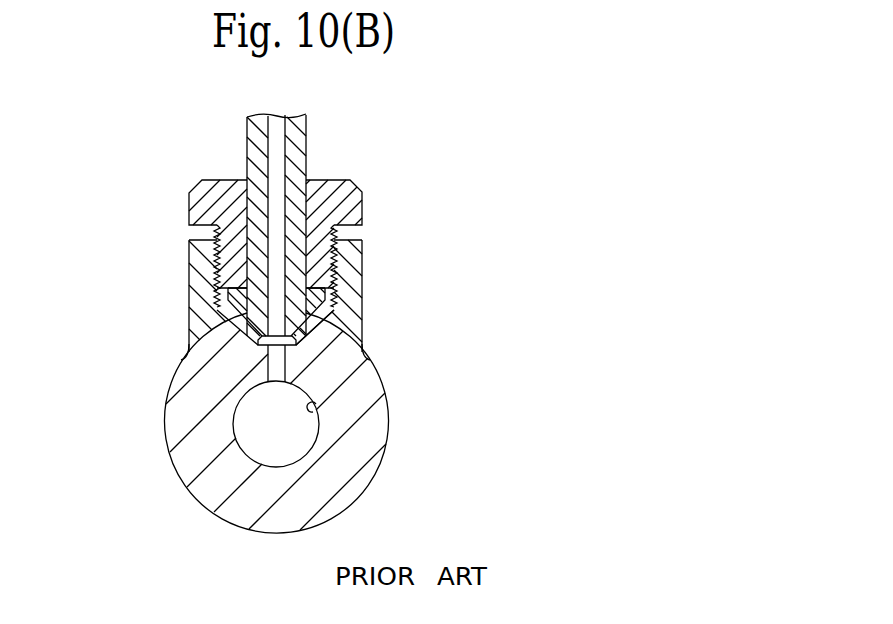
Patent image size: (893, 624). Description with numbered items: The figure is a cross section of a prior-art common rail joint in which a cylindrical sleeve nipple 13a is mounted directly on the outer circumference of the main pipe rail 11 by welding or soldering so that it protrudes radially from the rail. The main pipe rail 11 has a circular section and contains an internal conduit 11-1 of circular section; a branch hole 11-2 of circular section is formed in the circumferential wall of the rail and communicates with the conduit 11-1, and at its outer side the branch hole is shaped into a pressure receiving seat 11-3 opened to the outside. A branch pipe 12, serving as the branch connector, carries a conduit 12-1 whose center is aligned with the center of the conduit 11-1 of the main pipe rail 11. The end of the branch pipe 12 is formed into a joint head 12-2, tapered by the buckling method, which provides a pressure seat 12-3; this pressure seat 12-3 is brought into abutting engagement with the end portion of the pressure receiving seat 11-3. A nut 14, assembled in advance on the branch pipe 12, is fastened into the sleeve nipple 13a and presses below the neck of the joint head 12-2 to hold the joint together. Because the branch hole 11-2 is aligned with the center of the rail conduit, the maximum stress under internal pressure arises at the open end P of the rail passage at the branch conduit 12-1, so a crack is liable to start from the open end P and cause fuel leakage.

The main pipe rail 11 is at (382, 440).
The internal conduit 11-1 is at (316, 404).
The branch hole 11-2 is at (358, 343).
The pressure receiving seat 11-3 is at (262, 344).
The branch pipe 12 is at (305, 132).
The conduit of the branch connector 12-1 is at (282, 157).
The joint head 12-2 is at (240, 306).
The pressure seat 12-3 is at (342, 312).
The cylindrical sleeve nipple 13a is at (364, 253).
The nut 14 is at (358, 203).
The open end P is at (277, 383).